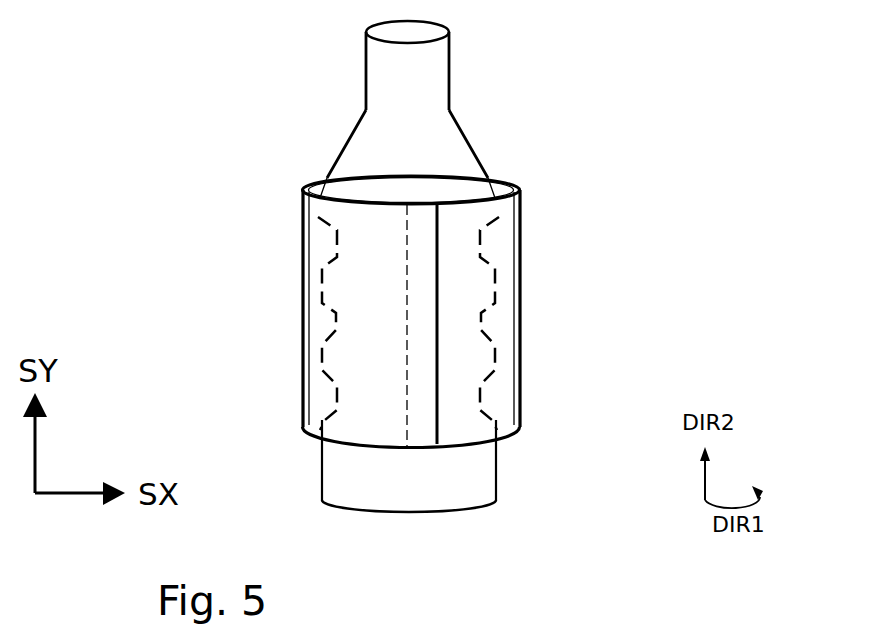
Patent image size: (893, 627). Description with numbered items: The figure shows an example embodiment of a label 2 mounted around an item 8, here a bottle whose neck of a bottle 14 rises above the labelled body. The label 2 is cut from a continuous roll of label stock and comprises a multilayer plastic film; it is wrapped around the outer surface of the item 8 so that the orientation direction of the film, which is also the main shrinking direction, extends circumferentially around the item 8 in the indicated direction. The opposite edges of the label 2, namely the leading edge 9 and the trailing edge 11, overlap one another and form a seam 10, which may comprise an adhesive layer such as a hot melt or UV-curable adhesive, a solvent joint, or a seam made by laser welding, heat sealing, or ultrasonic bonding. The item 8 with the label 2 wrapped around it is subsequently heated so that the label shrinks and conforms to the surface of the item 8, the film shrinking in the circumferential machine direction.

The label 2 is at (520, 230).
The item 8 is at (458, 118).
The neck of a bottle 14 is at (447, 75).
The leading edge of a label 9 is at (403, 415).
The seam 10 is at (422, 407).
The trailing edge of a label 11 is at (433, 337).